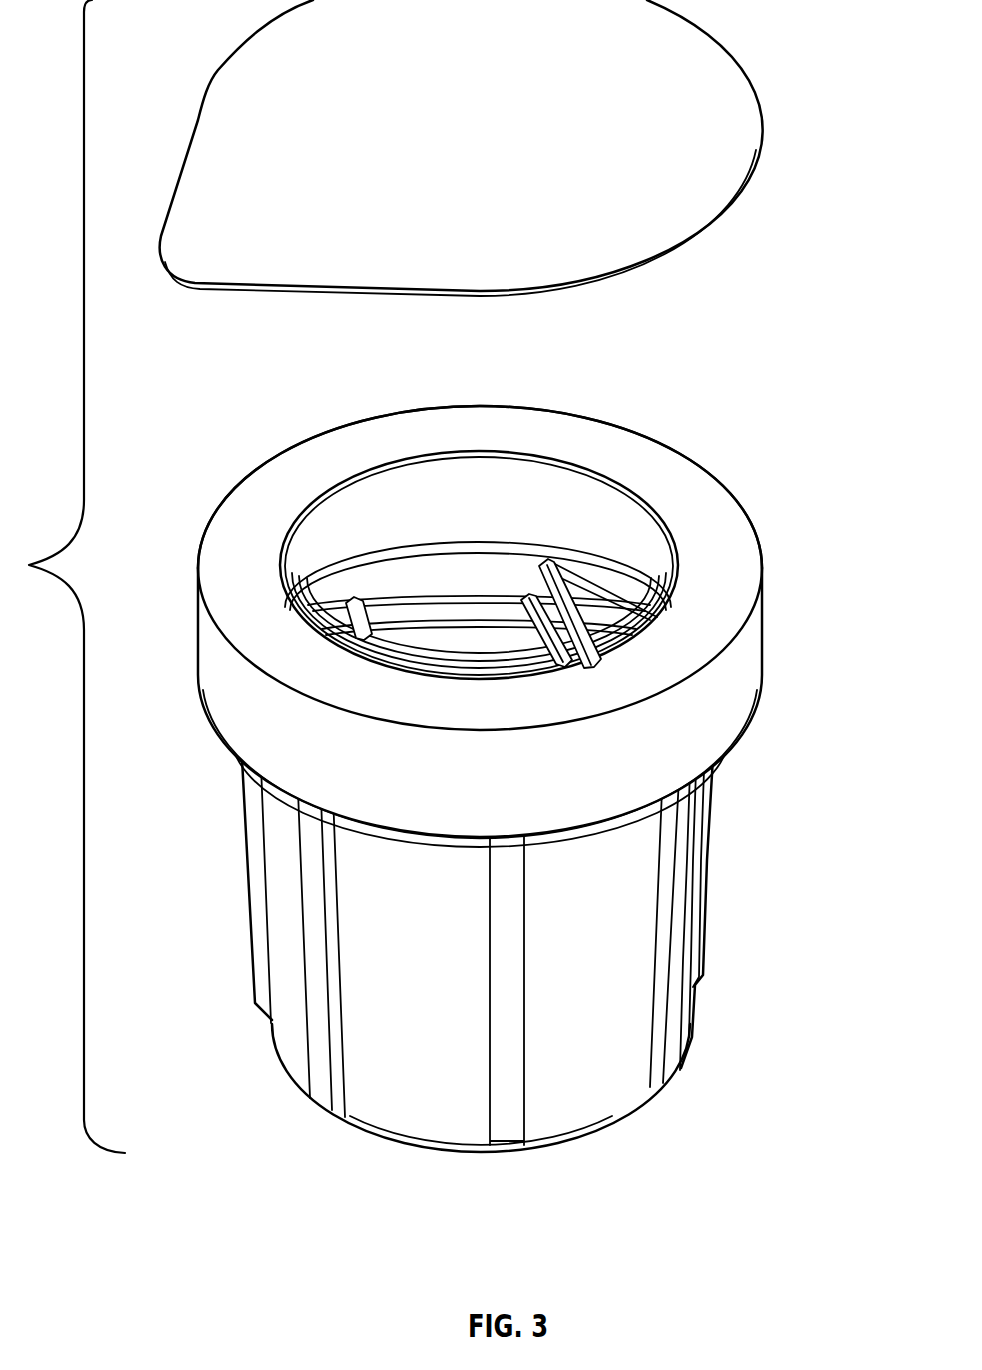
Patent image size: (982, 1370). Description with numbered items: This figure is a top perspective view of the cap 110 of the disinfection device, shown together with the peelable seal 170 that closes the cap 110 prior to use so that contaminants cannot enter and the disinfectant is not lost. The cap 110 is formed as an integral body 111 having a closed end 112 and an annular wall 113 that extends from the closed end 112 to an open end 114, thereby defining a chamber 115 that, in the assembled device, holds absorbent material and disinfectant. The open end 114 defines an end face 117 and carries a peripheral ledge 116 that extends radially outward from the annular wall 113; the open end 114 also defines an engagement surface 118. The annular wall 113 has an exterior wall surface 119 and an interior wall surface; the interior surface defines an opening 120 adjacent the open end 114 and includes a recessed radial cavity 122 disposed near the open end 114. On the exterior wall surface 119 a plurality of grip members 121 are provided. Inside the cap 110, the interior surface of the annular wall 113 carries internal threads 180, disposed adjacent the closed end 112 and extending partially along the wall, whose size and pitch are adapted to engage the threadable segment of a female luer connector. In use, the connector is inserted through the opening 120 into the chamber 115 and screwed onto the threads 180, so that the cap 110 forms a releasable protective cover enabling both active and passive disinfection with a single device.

The cap 110 is at (812, 990).
The integral body 111 is at (580, 1037).
The closed end 112 is at (607, 1128).
The annular wall 113 is at (686, 932).
The open end 114 is at (527, 488).
The chamber 115 is at (425, 582).
The peripheral ledge 116 is at (722, 712).
The end face 117 is at (728, 487).
The engagement surface 118 is at (718, 536).
The exterior wall surface 119 is at (293, 990).
The opening 120 is at (466, 496).
The grip members 121 is at (317, 1015).
The recessed radial cavity 122 is at (340, 547).
The peelable seal 170 is at (748, 104).
The internal threads 180 is at (400, 600).